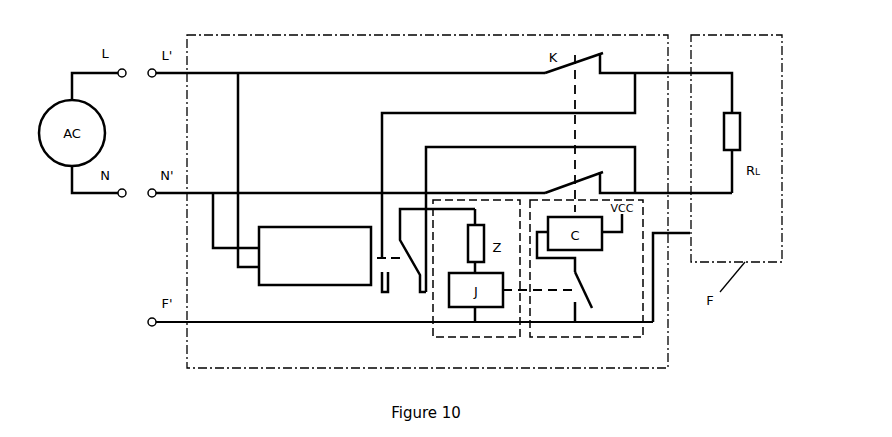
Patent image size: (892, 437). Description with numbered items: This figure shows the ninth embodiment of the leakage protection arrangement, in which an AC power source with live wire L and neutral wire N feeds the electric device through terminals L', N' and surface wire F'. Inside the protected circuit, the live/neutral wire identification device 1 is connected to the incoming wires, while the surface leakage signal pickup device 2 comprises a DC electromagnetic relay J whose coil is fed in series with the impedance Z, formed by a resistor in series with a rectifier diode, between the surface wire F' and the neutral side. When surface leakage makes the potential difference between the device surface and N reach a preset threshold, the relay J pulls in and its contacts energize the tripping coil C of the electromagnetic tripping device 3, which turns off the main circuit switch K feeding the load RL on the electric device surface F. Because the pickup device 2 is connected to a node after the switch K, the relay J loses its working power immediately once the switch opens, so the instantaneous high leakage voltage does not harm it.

The live/neutral wire identification device 1 is at (310, 277).
The surface leakage signal pickup device 2 is at (477, 333).
The electromagnetic tripping device 3 is at (582, 333).